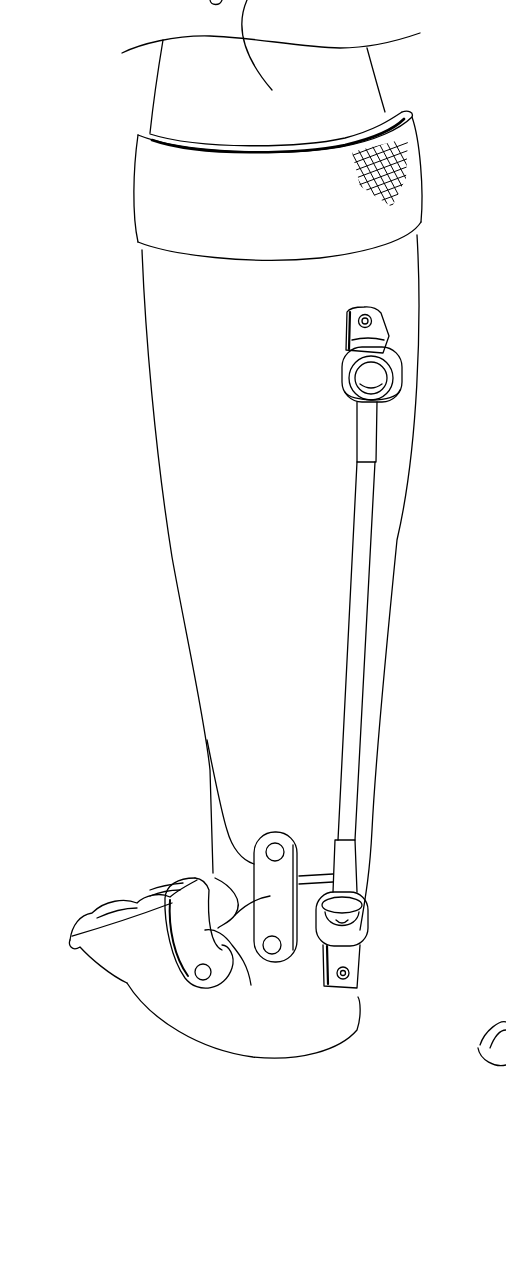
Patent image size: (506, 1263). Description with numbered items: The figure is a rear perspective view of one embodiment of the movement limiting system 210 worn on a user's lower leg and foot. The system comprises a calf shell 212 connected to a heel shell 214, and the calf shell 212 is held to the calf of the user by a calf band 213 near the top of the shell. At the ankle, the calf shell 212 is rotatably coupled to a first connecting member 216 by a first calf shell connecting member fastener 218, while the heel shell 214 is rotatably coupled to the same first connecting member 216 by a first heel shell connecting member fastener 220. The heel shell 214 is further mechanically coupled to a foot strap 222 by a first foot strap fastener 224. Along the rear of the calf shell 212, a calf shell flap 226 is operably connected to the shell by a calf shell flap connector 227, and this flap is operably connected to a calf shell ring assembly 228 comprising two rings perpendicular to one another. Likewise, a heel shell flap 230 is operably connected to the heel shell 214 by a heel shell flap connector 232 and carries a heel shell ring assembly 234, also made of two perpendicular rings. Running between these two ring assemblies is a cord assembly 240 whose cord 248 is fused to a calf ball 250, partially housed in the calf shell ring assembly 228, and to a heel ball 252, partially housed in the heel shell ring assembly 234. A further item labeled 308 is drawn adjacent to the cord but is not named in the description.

The movement limiting system 210 is at (132, 468).
The calf shell 212 is at (293, 522).
The calf band 213 is at (410, 158).
The heel shell 214 is at (195, 1010).
The first connecting member 216 is at (240, 957).
The first calf shell connecting member fastener 218 is at (279, 850).
The first heel shell connecting member fastener 220 is at (275, 948).
The foot strap 222 is at (187, 907).
The first foot strap fastener 224 is at (200, 972).
The calf shell flap 226 is at (350, 333).
The calf shell flap connector 227 is at (371, 321).
The calf shell ring assembly 228 is at (390, 398).
The heel shell flap 230 is at (362, 963).
The heel shell flap connector 232 is at (345, 976).
The heel shell ring assembly 234 is at (358, 882).
The cord assembly 240 is at (380, 612).
The cord 248 is at (351, 565).
The calf ball 250 is at (360, 377).
The heel ball 252 is at (367, 920).
The strut assembly 308 is at (456, 542).